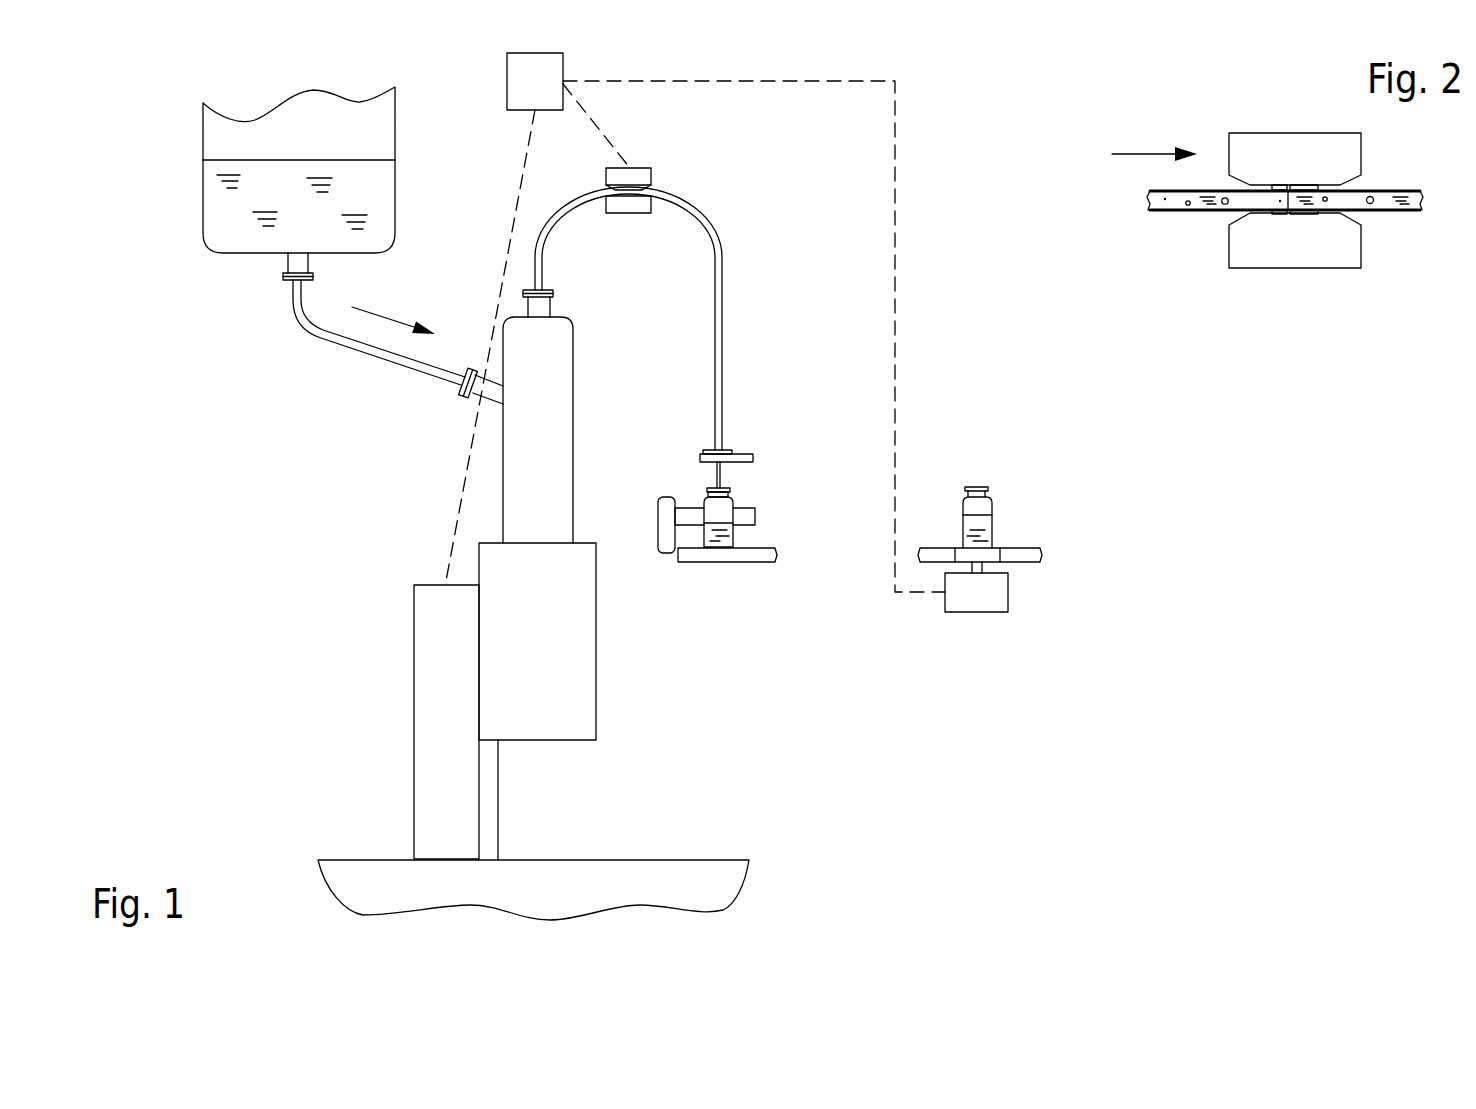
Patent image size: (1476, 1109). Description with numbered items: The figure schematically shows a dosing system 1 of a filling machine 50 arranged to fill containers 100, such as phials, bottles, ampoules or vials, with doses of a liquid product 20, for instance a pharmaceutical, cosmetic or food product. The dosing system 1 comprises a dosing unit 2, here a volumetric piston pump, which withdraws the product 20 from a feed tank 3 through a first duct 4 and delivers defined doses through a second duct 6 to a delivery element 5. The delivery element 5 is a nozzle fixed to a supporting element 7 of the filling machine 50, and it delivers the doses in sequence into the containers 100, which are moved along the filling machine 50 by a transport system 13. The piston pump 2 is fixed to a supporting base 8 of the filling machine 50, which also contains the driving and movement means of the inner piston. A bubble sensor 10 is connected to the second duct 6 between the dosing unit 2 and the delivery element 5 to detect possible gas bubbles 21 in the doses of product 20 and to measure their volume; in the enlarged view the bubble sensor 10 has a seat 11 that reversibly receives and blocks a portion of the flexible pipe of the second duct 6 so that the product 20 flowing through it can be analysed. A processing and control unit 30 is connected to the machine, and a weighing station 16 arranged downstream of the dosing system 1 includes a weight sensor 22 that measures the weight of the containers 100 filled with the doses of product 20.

In FIG. 1, the dosing system 1 is at (280, 446).
In FIG. 1, the dosing unit 2 is at (535, 494).
In FIG. 1, the feed tank 3 is at (203, 137).
In FIG. 1, the first duct 4 is at (325, 330).
In FIG. 1, the delivery element 5 is at (718, 467).
In FIG. 1, the second duct 6 is at (718, 275).
In FIG. 2, the second duct 6 is at (1150, 196).
In FIG. 1, the supporting element 7 is at (738, 450).
In FIG. 1, the supporting base 8 is at (433, 667).
In FIG. 1, the bubble sensor 10 is at (637, 177).
In FIG. 2, the bubble sensor 10 is at (1317, 237).
In FIG. 2, the seat 11 is at (1288, 211).
In FIG. 1, the transport system 13 is at (661, 585).
In FIG. 1, the weighing station 16 is at (1026, 642).
In FIG. 1, the product 20 is at (715, 540).
In FIG. 2, the product 20 is at (1398, 208).
In FIG. 2, the gas bubbles 21 is at (1225, 205).
In FIG. 1, the weight sensor 22 is at (987, 587).
In FIG. 1, the processing and control unit 30 is at (520, 70).
In FIG. 1, the filling machine 50 is at (328, 801).
In FIG. 1, the containers 100 is at (710, 503).